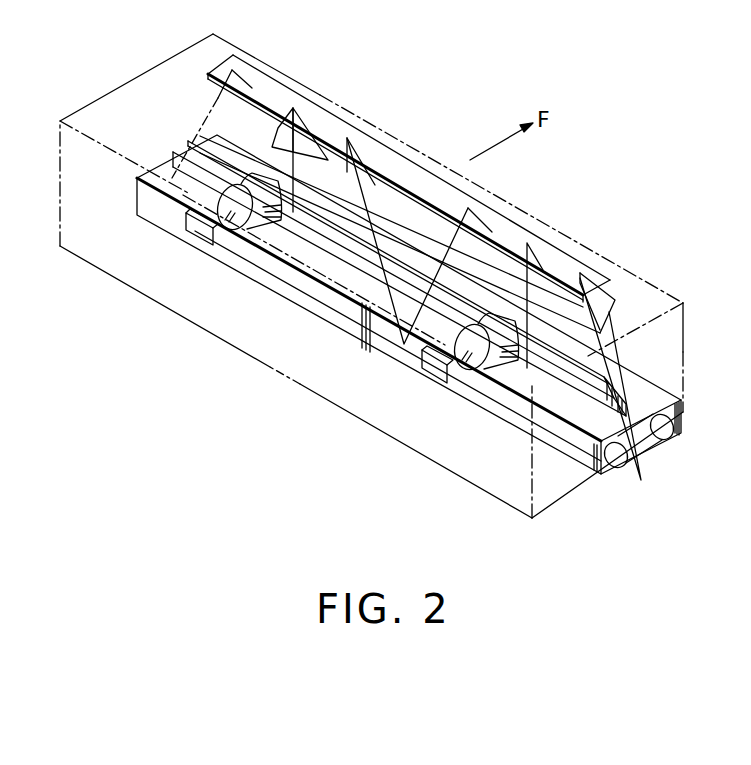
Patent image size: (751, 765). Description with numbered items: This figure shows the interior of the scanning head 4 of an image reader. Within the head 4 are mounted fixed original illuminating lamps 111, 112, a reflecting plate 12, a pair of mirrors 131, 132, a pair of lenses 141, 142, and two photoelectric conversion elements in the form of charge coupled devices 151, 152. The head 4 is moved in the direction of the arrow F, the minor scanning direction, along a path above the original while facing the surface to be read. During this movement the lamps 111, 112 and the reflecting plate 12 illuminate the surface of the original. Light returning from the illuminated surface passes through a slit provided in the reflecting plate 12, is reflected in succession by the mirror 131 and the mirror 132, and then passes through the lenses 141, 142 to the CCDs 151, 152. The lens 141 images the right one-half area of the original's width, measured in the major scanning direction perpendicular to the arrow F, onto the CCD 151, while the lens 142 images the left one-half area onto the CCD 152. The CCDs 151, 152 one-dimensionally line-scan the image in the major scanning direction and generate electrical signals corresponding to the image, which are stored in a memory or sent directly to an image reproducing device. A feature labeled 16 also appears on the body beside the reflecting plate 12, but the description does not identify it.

The head 4 is at (278, 372).
The reflecting plate 12 is at (657, 395).
The guide groove 16 is at (623, 392).
The mirror 131 is at (588, 263).
The mirror 132 is at (607, 303).
The lens 141 is at (490, 368).
The lens 142 is at (255, 230).
The charge coupled device (CCD) 151 is at (437, 367).
The charge coupled device (CCD) 152 is at (200, 238).
The original illuminating lamp 111 is at (620, 468).
The original illuminating lamp 112 is at (667, 427).